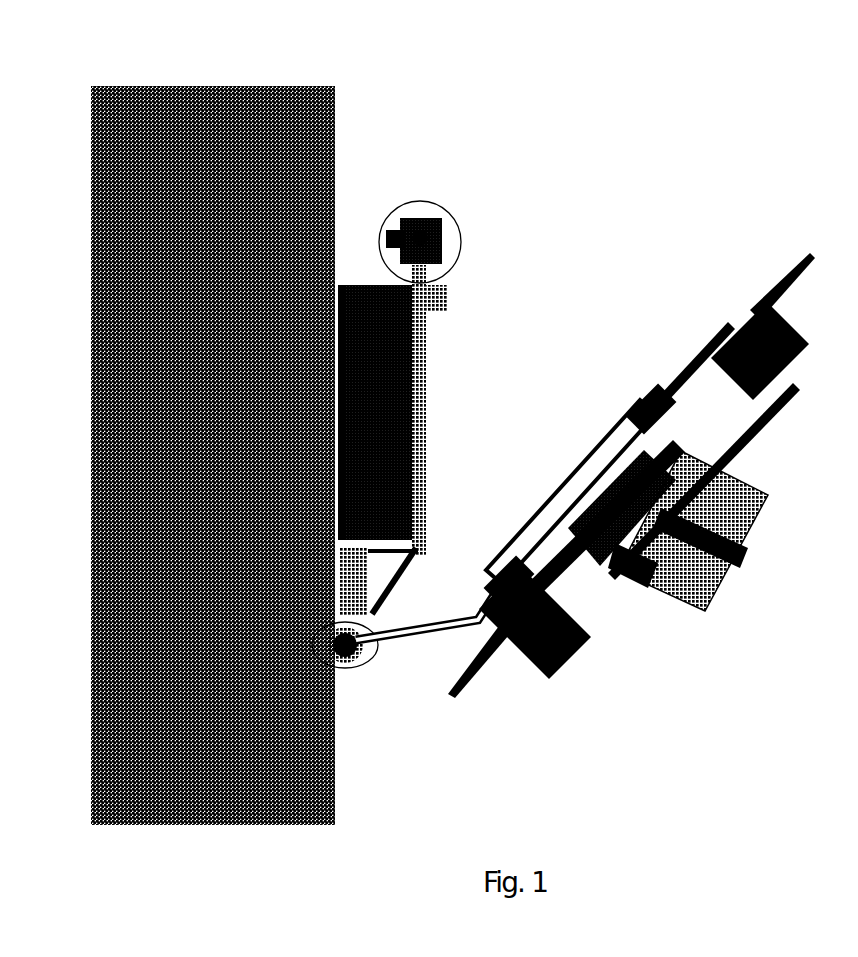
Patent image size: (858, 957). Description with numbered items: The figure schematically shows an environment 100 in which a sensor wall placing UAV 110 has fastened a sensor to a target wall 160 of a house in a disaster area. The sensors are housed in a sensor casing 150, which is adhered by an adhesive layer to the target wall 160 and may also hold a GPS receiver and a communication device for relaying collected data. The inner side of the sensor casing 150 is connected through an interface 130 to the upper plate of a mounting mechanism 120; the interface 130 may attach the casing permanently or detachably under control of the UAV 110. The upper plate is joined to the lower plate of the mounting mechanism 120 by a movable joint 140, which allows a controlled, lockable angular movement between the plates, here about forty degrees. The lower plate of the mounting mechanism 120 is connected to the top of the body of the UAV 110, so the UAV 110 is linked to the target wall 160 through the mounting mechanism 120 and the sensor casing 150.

The environment 100 is at (118, 70).
The sensor wall placing UAV 110 is at (688, 553).
The mounting mechanism 120 is at (583, 460).
The interface 130 is at (453, 235).
The movable joint 140 is at (300, 641).
The sensor casing 150 is at (393, 440).
The target wall 160 is at (213, 455).